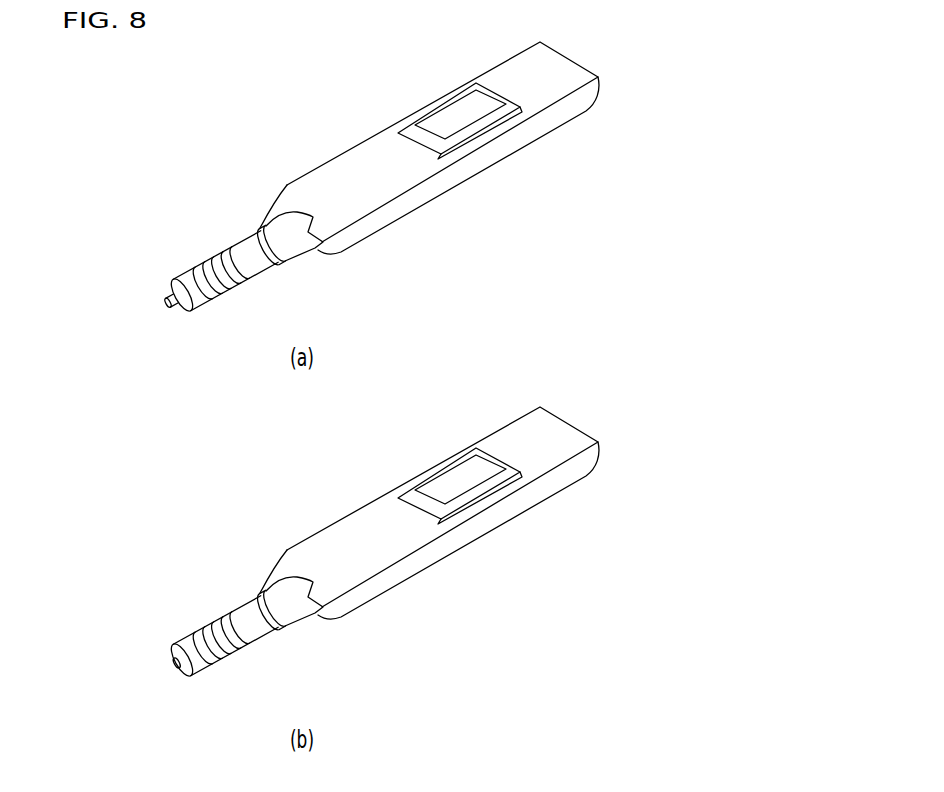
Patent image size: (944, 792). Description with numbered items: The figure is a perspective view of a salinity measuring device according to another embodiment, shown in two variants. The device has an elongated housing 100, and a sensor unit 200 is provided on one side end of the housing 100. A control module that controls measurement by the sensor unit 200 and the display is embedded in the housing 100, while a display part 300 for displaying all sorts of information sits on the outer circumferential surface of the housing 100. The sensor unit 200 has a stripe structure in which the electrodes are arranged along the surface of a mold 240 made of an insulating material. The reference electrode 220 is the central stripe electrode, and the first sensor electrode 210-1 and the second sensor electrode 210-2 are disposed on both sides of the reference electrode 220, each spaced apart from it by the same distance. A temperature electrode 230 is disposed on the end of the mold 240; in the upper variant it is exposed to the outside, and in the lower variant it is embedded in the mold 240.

The housing 100 is at (498, 150).
The sensor unit 200 is at (293, 288).
The first sensor electrode 210-1 is at (227, 257).
The second sensor electrode 210-2 is at (198, 267).
The reference electrode 220 is at (205, 263).
The temperature electrode 230 is at (167, 305).
The mold 240 is at (258, 268).
The display part 300 is at (448, 113).